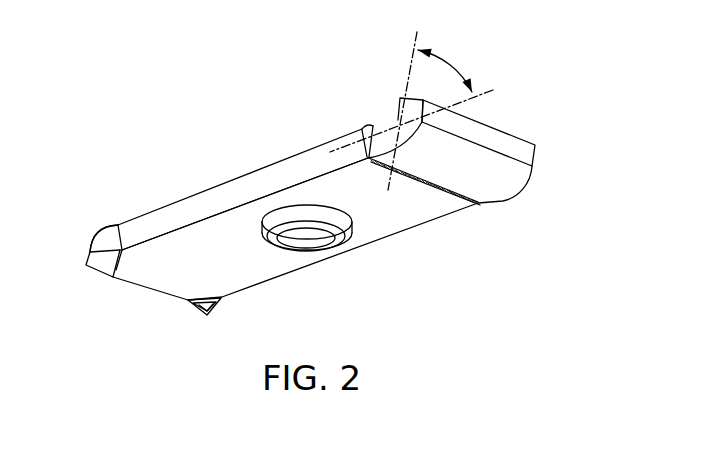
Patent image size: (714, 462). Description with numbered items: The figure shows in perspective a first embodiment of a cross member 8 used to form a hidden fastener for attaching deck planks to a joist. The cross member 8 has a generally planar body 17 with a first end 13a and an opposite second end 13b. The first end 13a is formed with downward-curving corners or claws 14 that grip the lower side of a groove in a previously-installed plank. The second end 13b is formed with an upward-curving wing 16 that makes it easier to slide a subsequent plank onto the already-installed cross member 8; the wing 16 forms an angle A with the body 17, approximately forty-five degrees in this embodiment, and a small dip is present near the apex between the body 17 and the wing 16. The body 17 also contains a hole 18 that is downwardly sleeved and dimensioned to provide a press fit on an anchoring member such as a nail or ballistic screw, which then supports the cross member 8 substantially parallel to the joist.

The cross member 8 is at (345, 228).
The first end 13a is at (132, 298).
The second end 13b is at (503, 118).
The downward-curving corners or claws 14 is at (98, 265).
The upward-curving wing 16 is at (498, 138).
The generally planar body 17 is at (380, 225).
The hole 18 is at (322, 238).